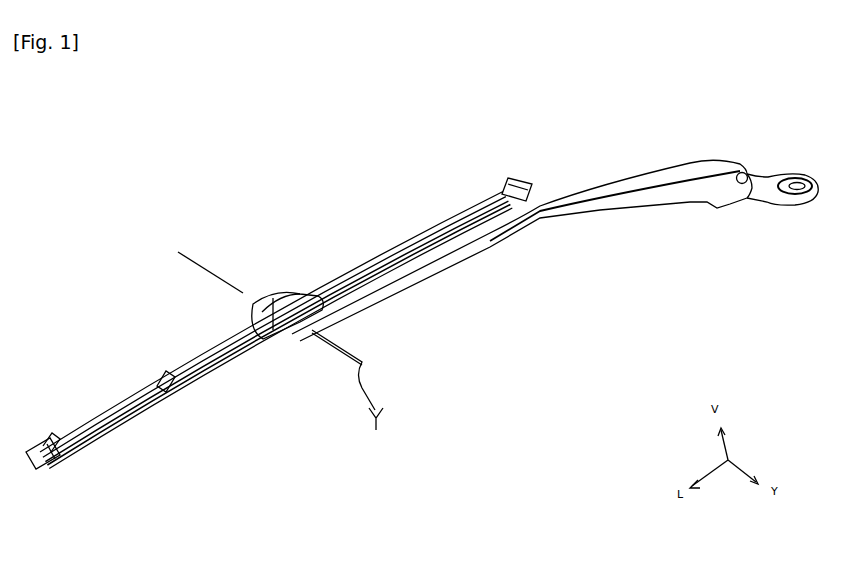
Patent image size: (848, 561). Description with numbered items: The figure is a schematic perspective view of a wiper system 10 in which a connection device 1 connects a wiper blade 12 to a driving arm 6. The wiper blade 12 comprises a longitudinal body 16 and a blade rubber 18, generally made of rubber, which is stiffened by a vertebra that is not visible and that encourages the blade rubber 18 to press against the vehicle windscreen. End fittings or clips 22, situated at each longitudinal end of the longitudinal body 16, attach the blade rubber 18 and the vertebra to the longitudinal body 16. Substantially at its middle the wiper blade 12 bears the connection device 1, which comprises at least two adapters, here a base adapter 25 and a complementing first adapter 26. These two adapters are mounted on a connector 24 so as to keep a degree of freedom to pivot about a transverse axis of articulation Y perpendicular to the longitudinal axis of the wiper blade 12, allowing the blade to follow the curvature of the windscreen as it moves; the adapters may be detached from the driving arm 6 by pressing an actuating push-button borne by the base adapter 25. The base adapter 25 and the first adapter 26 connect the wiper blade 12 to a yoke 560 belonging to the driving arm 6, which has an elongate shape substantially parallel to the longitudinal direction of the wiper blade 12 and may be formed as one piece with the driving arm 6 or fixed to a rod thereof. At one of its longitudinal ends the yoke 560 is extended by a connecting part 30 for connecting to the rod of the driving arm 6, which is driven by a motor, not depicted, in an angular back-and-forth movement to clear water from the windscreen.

The connection device 1 is at (304, 266).
The driving arm 6 is at (541, 235).
The wiper system 10 is at (337, 170).
The wiper blade 12 is at (67, 466).
The longitudinal body 16 is at (133, 393).
The blade rubber 18 is at (143, 408).
The end fittings 22 is at (52, 448).
The connector 24 is at (283, 338).
The base adapter 25 is at (257, 340).
The first adapter 26 is at (257, 306).
The connecting part 30 is at (378, 278).
The yoke 560 is at (288, 306).